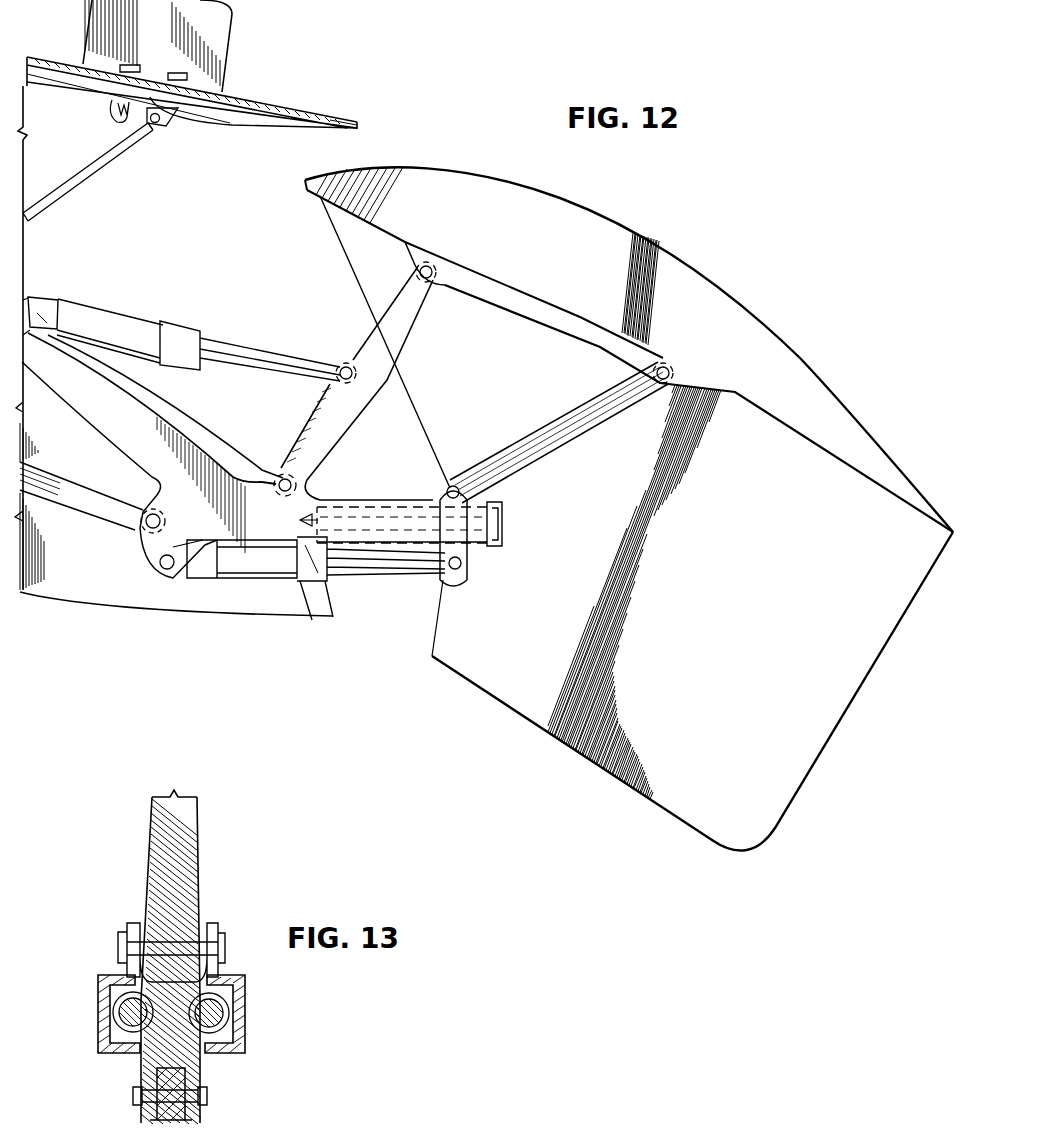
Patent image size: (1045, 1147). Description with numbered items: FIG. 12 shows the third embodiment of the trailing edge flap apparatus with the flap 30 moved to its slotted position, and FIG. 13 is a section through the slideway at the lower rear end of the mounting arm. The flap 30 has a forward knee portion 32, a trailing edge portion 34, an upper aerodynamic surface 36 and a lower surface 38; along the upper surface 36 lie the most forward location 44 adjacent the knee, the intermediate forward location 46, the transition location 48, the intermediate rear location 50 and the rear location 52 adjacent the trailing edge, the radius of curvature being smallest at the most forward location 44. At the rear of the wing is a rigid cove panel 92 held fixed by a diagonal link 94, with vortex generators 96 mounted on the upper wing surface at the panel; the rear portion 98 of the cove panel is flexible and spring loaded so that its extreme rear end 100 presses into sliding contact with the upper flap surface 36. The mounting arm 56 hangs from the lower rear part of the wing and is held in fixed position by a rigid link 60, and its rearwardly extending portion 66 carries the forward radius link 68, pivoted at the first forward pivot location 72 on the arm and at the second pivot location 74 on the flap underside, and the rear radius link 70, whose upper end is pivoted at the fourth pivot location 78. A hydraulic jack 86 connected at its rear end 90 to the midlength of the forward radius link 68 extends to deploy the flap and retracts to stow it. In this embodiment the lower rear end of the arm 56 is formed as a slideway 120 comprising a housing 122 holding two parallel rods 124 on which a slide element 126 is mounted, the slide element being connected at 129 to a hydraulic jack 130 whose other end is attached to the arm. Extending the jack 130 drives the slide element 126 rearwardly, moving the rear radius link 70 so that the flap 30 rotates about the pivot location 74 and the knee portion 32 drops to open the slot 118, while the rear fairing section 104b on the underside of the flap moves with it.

In FIG. 12, the flap 30 is at (713, 278).
In FIG. 12, the forward knee portion 32 is at (313, 200).
In FIG. 12, the trailing edge portion 34 is at (927, 515).
In FIG. 12, the upper aerodynamic surface 36 is at (760, 313).
In FIG. 12, the lower surface 38 is at (847, 463).
In FIG. 12, the most forward location 44 is at (308, 186).
In FIG. 12, the intermediate forward location 46 is at (418, 163).
In FIG. 12, the transition location 48 is at (700, 287).
In FIG. 12, the intermediate rear location 50 is at (852, 412).
In FIG. 12, the rear location 52 is at (943, 517).
In FIG. 12, the mounting arm 56 is at (113, 428).
In FIG. 12, the rigid link 60 is at (108, 510).
In FIG. 12, the rearwardly extending portion 66 is at (267, 530).
In FIG. 12, the forward radius link 68 is at (410, 342).
In FIG. 12, the rear radius link 70 is at (560, 435).
In FIG. 13, the rear radius link 70 is at (193, 857).
In FIG. 12, the first forward pivot location 72 is at (310, 478).
In FIG. 12, the second pivot location 74 is at (432, 282).
In FIG. 12, the fourth pivot location 78 is at (652, 372).
In FIG. 12, the hydraulic jack 86 is at (158, 271).
In FIG. 12, the rear end connection of hydraulic jack 90 is at (357, 374).
In FIG. 12, the cove panel 92 is at (57, 60).
In FIG. 12, the diagonal link 94 is at (85, 150).
In FIG. 12, the vortex generators 96 is at (222, 20).
In FIG. 12, the rear portion of cove panel 98 is at (318, 122).
In FIG. 12, the extreme rear end of cove portion 100 is at (348, 122).
In FIG. 12, the rear fairing section 104b is at (755, 812).
In FIG. 12, the slot 118 is at (353, 148).
In FIG. 12, the slideway 120 is at (406, 560).
In FIG. 13, the slideway 120 is at (280, 1027).
In FIG. 12, the housing 122 is at (388, 503).
In FIG. 13, the housing 122 is at (247, 997).
In FIG. 13, the parallel rods 124 is at (215, 1020).
In FIG. 12, the slide element 126 is at (473, 547).
In FIG. 13, the slide element 126 is at (193, 1068).
In FIG. 12, the connection of slide element 129 is at (473, 490).
In FIG. 13, the connection of slide element 129 is at (227, 948).
In FIG. 12, the hydraulic jack 130 is at (302, 587).